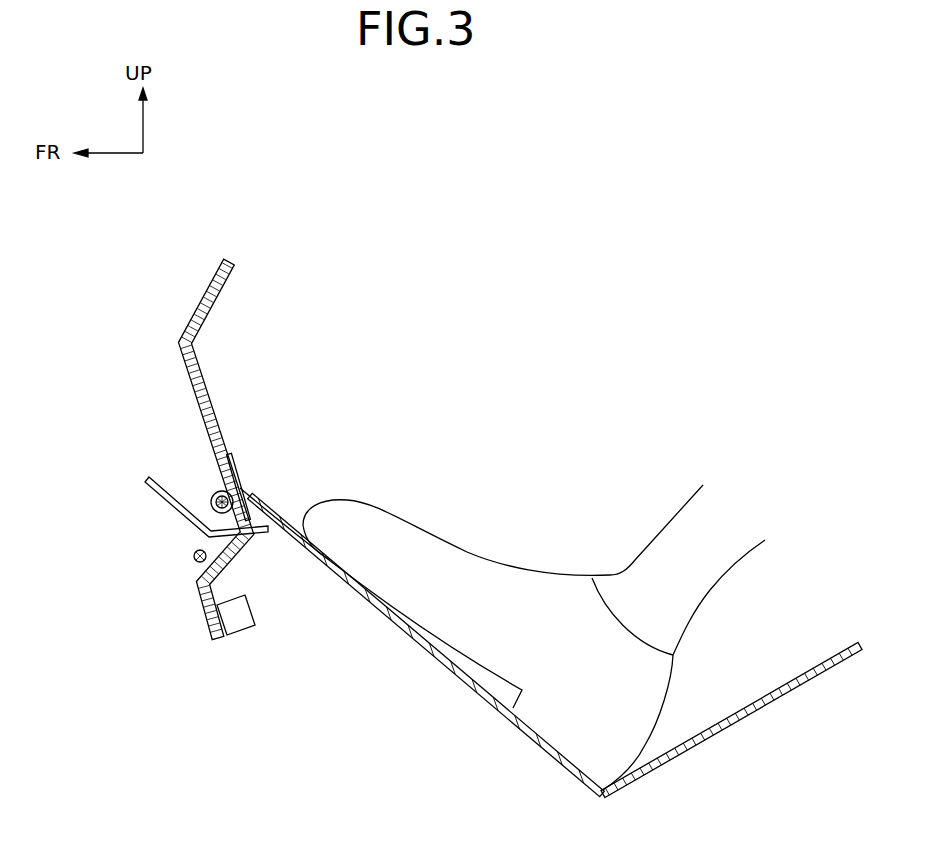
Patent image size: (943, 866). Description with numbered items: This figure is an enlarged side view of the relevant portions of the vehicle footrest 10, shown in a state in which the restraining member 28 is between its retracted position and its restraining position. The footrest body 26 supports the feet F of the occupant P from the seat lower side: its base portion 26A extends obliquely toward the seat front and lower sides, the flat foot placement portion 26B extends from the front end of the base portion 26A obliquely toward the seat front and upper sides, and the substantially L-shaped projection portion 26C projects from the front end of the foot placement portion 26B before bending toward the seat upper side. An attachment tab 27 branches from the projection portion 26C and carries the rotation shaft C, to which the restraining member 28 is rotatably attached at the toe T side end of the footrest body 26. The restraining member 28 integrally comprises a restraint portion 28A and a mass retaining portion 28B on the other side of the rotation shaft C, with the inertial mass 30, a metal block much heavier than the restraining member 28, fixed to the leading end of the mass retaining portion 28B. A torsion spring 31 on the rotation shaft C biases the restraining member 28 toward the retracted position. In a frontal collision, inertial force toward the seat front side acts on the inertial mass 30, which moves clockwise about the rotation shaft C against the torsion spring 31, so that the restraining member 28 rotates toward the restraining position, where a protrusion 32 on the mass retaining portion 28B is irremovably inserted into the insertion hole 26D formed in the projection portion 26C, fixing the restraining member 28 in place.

The vehicle footrest 10 is at (357, 300).
The footrest body 26 is at (555, 670).
The base portion 26A is at (810, 681).
The foot placement portion 26B is at (450, 681).
The projection portion 26C is at (185, 484).
The insertion hole 26D is at (156, 499).
The attachment tab 27 is at (258, 495).
The restraining member 28 is at (215, 384).
The restraint portion 28A is at (206, 286).
The mass retaining portion 28B is at (206, 641).
The inertial mass 30 is at (248, 632).
The torsion spring 31 is at (251, 456).
The protrusion 32 is at (198, 563).
The rotation shaft C is at (212, 513).
The toe T is at (352, 499).
The feet F is at (543, 570).
The occupant P is at (677, 516).